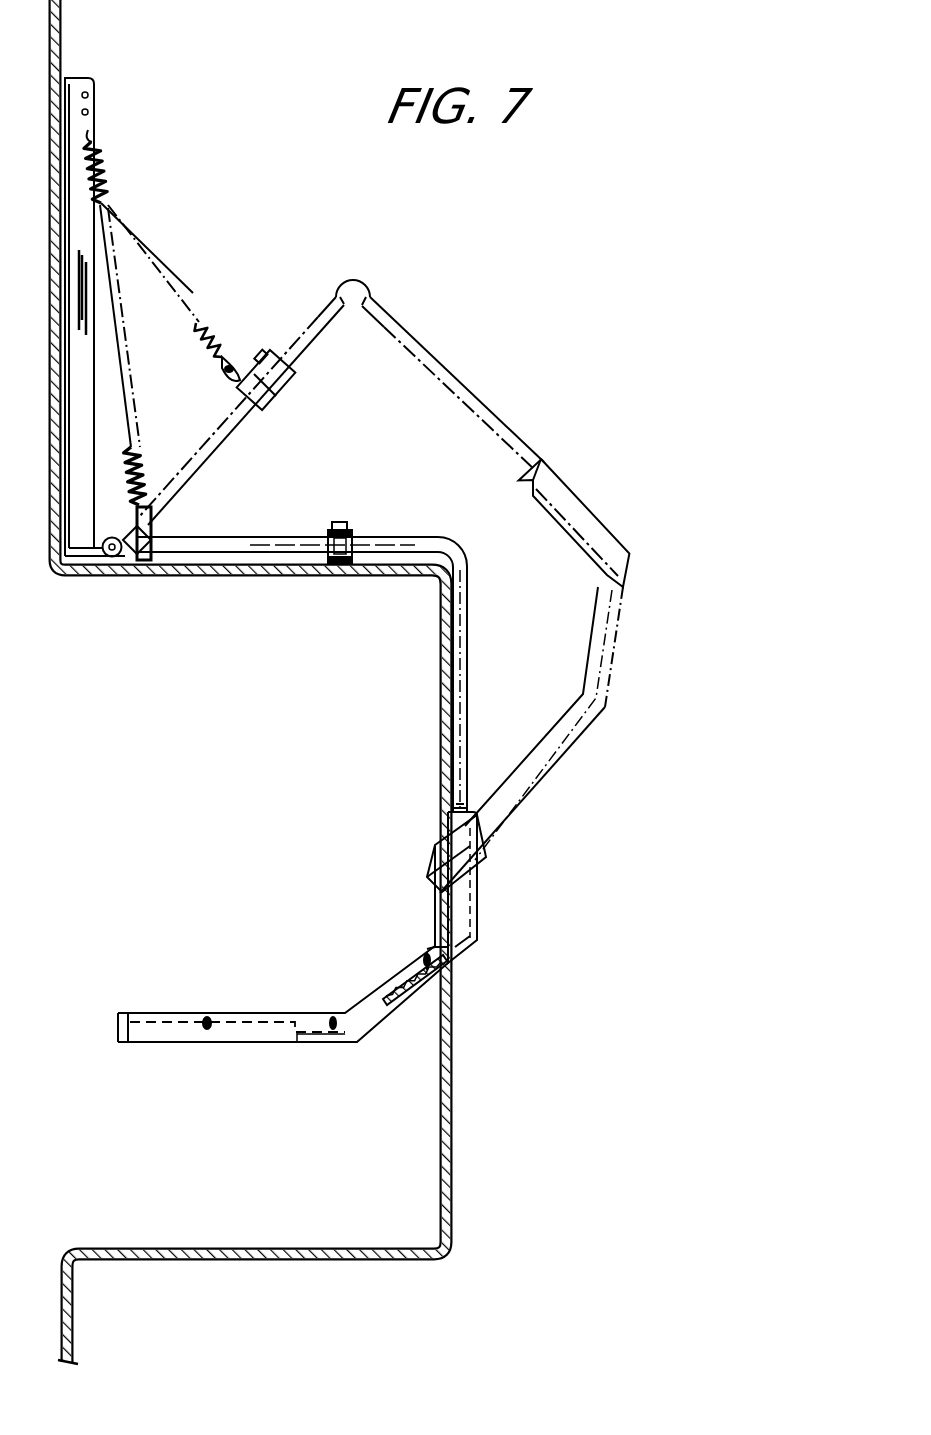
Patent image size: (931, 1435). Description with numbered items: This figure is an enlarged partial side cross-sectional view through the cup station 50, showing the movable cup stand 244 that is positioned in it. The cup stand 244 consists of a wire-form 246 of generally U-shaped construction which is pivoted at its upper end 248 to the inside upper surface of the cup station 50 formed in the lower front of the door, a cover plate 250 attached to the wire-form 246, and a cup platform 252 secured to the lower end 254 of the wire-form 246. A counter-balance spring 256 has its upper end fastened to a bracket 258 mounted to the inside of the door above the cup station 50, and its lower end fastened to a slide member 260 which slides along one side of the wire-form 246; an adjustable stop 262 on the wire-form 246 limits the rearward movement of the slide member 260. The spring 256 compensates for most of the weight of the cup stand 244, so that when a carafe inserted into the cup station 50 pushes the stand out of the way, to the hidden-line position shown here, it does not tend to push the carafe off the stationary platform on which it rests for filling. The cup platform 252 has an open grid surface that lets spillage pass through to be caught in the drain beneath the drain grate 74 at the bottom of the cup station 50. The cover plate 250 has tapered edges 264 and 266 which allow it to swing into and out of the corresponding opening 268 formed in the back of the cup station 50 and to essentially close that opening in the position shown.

The cup station 50 is at (205, 735).
The drain grate 74 is at (172, 1248).
The movable cup stand 244 is at (188, 968).
The wire-form 246 is at (488, 410).
The upper end 248 is at (111, 562).
The cover plate 250 is at (435, 912).
The cup platform 252 is at (585, 734).
The lower end 254 is at (470, 806).
The counter-balance spring 256 is at (105, 182).
The bracket 258 is at (96, 124).
The slide member 260 is at (158, 537).
The adjustable stop 262 is at (295, 392).
The tapered edge 264 is at (440, 845).
The tapered edge 266 is at (450, 963).
The opening 268 is at (452, 969).